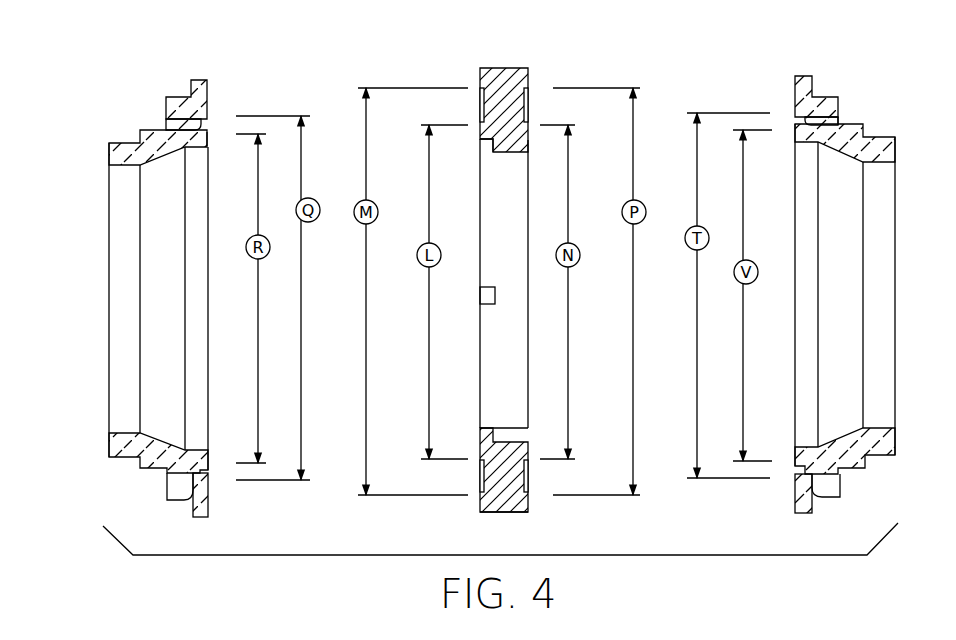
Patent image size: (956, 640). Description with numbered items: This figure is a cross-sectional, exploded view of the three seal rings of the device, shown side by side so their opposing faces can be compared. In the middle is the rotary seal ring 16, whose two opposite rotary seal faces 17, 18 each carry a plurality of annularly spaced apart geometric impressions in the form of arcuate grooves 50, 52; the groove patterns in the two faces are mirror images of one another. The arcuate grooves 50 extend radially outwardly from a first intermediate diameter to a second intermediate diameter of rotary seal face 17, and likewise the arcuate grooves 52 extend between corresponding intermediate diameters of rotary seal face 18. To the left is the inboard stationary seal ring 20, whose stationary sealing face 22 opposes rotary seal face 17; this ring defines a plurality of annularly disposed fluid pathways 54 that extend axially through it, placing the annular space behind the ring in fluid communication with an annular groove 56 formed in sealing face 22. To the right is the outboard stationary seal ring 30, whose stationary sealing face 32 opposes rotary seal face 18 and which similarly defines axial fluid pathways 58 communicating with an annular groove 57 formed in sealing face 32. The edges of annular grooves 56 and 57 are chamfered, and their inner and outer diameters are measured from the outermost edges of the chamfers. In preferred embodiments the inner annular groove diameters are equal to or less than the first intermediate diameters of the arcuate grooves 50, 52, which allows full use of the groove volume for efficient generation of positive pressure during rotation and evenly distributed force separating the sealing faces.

The rotary seal ring 16 is at (505, 78).
The rotary seal face 17 is at (480, 134).
The rotary seal face 18 is at (528, 140).
The inboard stationary seal ring 20 is at (109, 150).
The stationary sealing face 22 is at (207, 140).
The outboard stationary seal ring 30 is at (805, 82).
The stationary sealing face 32 is at (800, 118).
The arcuate grooves 50 is at (480, 110).
The arcuate grooves 52 is at (528, 105).
The fluid pathways 54 is at (166, 125).
The annular groove 56 is at (207, 122).
The annular groove 57 is at (795, 124).
The fluid pathways 58 is at (838, 118).